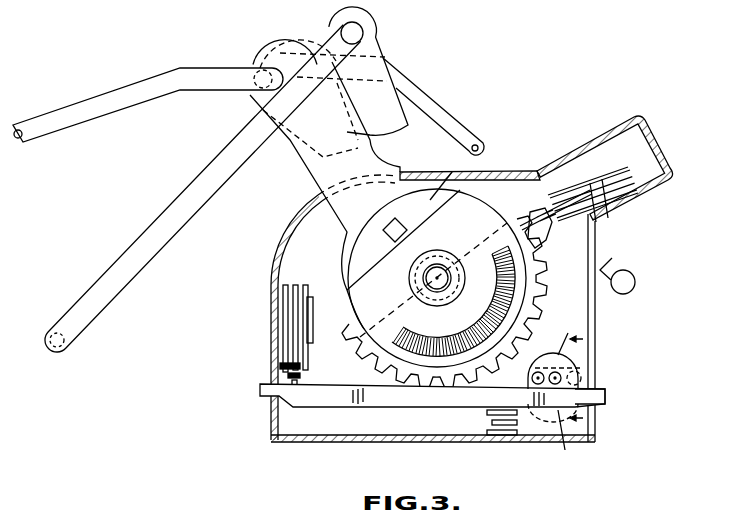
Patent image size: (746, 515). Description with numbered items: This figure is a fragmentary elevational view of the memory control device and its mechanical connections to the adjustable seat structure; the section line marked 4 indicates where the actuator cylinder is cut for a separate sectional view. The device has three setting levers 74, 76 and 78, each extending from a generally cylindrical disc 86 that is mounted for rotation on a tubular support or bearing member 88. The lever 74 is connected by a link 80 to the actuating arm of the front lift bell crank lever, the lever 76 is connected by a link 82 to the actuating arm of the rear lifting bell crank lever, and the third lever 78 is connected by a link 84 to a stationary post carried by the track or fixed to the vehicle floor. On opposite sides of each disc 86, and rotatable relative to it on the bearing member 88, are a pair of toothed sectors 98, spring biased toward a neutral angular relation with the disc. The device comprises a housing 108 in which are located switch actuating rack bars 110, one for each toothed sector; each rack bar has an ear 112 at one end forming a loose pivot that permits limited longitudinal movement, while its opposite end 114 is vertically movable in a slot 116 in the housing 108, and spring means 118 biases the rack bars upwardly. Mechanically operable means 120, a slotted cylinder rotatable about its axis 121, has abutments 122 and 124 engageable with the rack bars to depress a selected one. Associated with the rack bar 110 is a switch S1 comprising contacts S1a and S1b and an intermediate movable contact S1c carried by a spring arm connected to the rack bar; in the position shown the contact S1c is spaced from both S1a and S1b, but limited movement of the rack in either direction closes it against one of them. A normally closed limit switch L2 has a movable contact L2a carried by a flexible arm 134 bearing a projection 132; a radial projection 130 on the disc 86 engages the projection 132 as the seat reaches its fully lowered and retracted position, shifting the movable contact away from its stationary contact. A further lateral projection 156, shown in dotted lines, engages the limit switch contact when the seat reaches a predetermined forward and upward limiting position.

The setting lever 74 is at (258, 62).
The setting lever 76 is at (282, 45).
The setting lever 78 is at (376, 30).
The link 80 is at (138, 97).
The link 82 is at (445, 113).
The link 84 is at (208, 204).
The cylindrical disc 86 is at (440, 172).
The tubular support or bearing member 88 is at (440, 270).
The toothed sector 98 is at (560, 352).
The housing 108 is at (596, 313).
The switch actuating rack bar 110 is at (556, 439).
The ear 112 is at (262, 400).
The rack bar end 114 is at (606, 398).
The slot 116 is at (597, 410).
The spring means 118 is at (488, 421).
The mechanically operable means (slotted cylinder actuator) 120 is at (566, 313).
The axis 121 is at (532, 378).
The abutment 122 is at (548, 378).
The abutment 124 is at (582, 368).
The radial projection 130 is at (542, 237).
The projection 132 is at (540, 213).
The flexible arm 134 is at (605, 195).
The lateral projection 156 is at (398, 170).
The switch S1 is at (285, 352).
The switch contact S1a is at (285, 360).
The switch contact S1b is at (306, 368).
The intermediate movable contact S1c is at (298, 380).
The limit switch L2 is at (548, 193).
The movable contact L2a is at (588, 182).
The section line 4- 4 is at (572, 387).